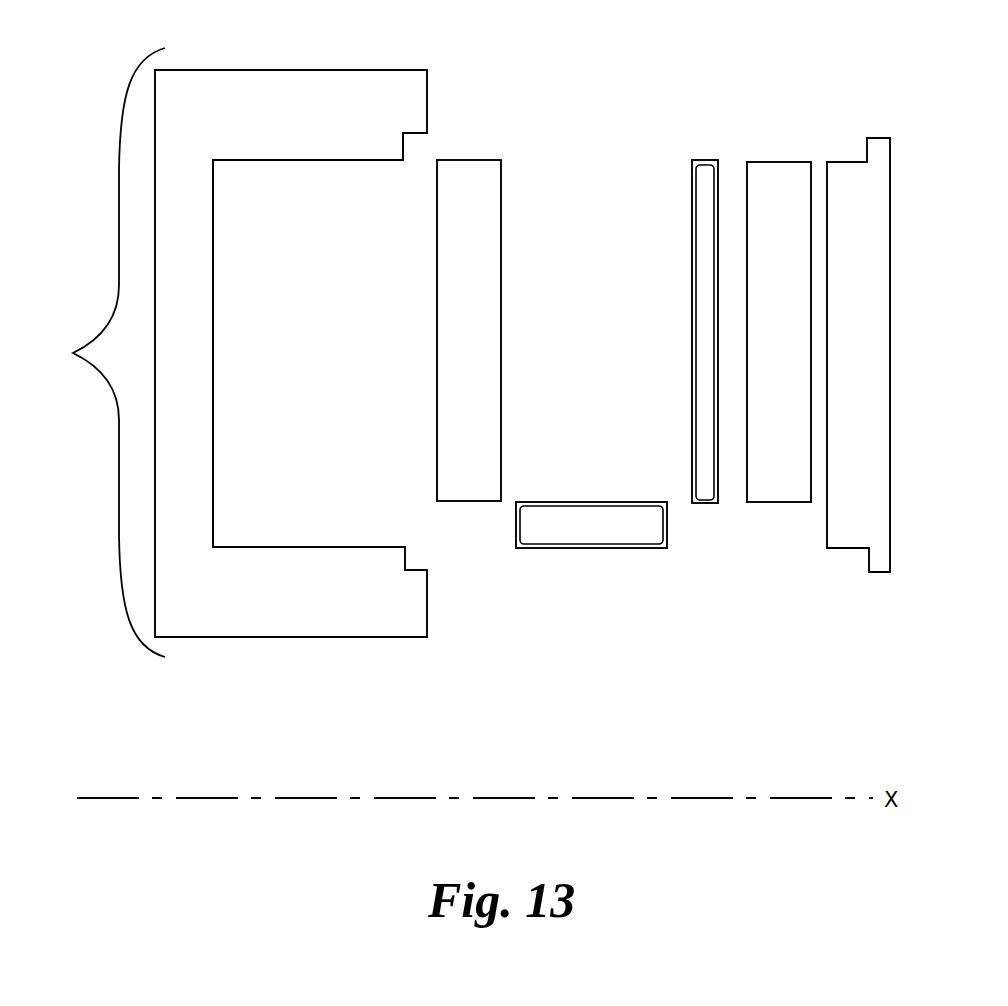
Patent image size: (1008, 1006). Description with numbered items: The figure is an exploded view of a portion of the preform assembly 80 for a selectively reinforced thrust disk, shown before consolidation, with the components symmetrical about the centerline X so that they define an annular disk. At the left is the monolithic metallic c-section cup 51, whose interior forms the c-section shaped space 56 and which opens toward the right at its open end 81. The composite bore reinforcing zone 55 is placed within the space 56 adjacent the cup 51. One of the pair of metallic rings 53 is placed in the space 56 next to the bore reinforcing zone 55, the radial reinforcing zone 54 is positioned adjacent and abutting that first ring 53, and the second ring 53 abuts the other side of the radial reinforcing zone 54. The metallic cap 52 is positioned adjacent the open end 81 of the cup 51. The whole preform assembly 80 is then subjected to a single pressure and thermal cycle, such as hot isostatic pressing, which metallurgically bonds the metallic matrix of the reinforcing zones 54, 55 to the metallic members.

The preform assembly 80 is at (106, 352).
The metallic c-section cup 51 is at (382, 92).
The open end 81 is at (428, 133).
The c-section shaped space 56 is at (300, 462).
The metallic rings 53 is at (471, 182).
The radial reinforcing zone 54 is at (707, 160).
The bore reinforcing zone 55 is at (612, 549).
The metallic cap 52 is at (848, 532).